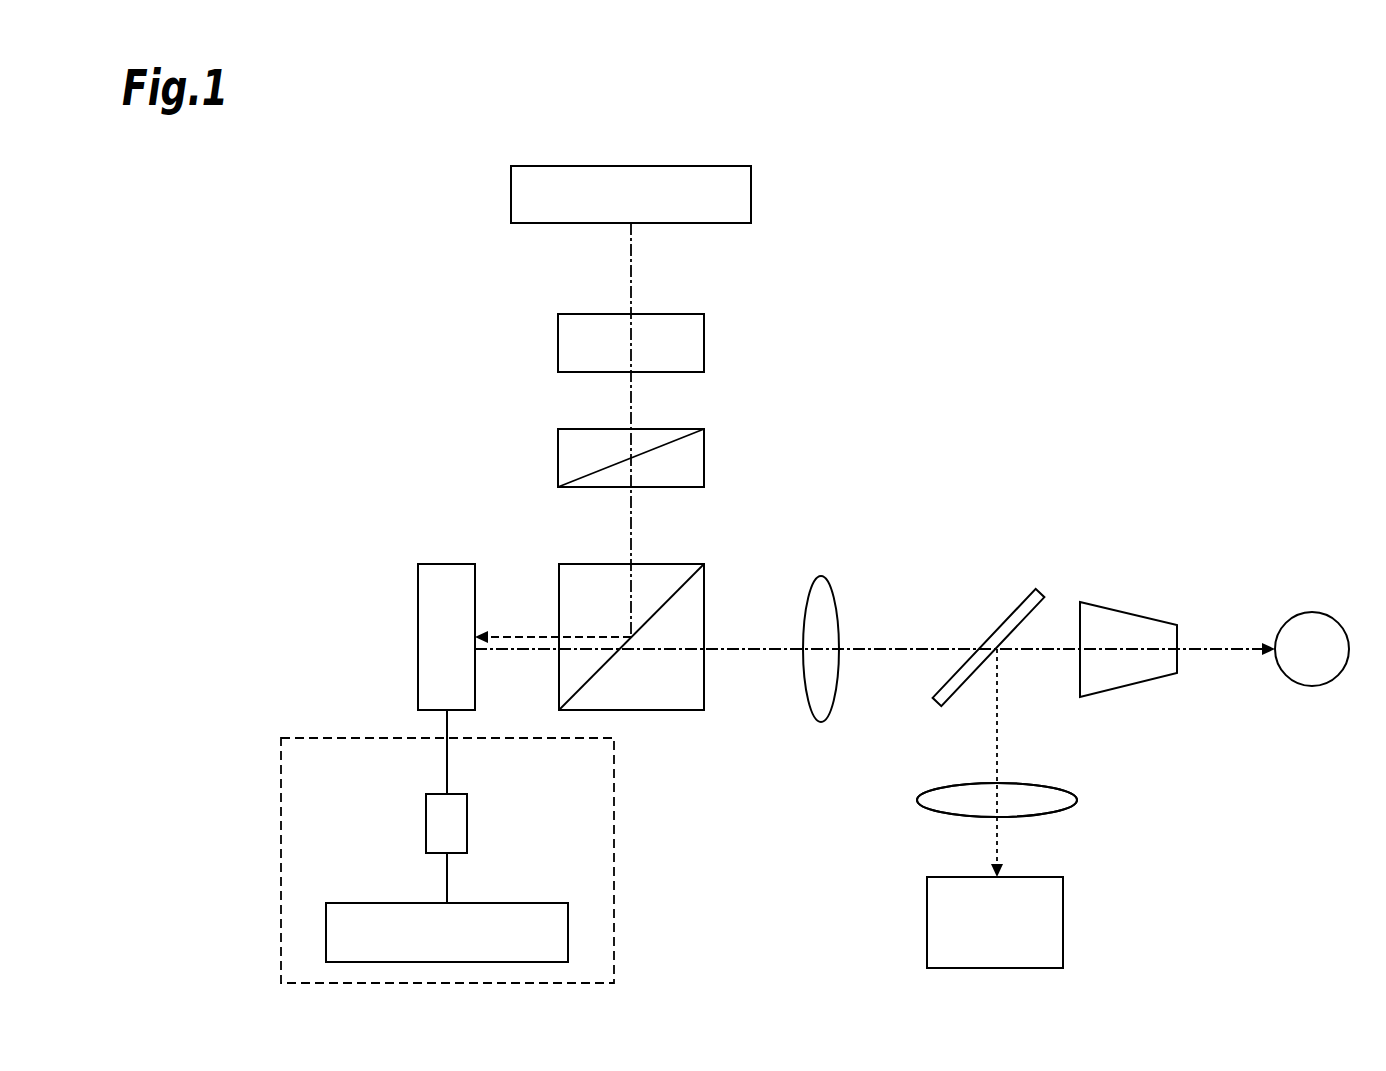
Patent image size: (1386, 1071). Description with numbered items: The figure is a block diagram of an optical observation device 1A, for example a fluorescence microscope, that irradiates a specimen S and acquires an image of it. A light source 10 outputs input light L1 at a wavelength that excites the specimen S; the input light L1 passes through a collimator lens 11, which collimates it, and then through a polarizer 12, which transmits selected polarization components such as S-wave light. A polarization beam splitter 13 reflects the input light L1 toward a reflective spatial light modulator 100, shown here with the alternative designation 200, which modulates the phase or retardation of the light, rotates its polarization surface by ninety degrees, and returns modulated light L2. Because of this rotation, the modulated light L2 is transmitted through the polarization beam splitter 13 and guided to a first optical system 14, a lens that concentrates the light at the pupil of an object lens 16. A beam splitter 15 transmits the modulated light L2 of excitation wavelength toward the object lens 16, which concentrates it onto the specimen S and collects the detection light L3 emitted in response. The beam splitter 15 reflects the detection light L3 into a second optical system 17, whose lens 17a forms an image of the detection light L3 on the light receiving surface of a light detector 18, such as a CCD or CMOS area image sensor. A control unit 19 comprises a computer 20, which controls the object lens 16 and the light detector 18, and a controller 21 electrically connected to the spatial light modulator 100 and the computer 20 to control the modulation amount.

The optical observation device 1A is at (922, 160).
The light source 10 is at (751, 190).
The collimator lens 11 is at (704, 340).
The polarizer 12 is at (704, 455).
The polarization beam splitter 13 is at (682, 563).
The first optical system 14 is at (828, 578).
The beam splitter 15 is at (1037, 598).
The object lens 16 is at (1128, 607).
The second optical system 17 is at (997, 800).
The lens 17a is at (1077, 800).
The light detector 18 is at (1063, 905).
The control unit 19 is at (614, 780).
The computer 20 is at (378, 903).
The controller 21 is at (467, 820).
The spatial light modulator 100 is at (418, 590).
The light modulation device 200 is at (446, 637).
The input light L1 is at (631, 280).
The modulated light L2 is at (531, 655).
The detection light L3 is at (997, 738).
The specimen S is at (1310, 612).